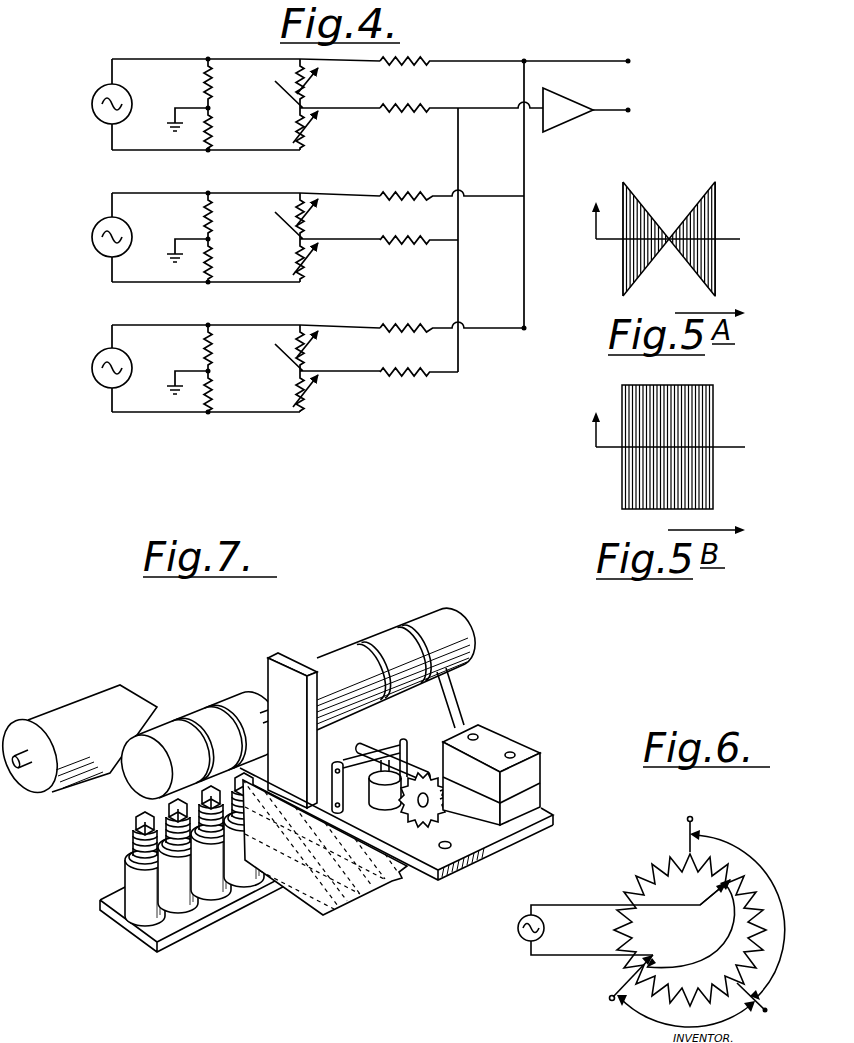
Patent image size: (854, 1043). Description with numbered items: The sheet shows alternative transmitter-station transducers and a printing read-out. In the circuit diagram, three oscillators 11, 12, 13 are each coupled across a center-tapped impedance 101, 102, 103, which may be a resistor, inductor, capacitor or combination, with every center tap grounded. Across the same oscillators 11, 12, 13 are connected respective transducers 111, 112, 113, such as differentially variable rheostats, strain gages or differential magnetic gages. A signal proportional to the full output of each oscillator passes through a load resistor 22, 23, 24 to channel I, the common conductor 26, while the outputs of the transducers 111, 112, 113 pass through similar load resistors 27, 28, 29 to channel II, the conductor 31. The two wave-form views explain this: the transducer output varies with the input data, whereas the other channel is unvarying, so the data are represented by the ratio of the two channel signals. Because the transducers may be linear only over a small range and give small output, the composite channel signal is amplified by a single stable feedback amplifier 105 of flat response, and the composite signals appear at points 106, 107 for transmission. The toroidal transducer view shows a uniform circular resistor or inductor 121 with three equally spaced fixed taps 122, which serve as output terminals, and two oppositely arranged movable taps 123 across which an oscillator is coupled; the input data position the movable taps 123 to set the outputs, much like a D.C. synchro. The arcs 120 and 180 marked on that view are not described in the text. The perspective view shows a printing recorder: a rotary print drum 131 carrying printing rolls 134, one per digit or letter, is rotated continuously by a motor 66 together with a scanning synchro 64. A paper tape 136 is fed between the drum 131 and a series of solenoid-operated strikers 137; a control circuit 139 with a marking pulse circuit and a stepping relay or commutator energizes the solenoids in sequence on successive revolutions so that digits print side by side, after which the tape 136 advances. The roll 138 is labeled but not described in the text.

In FIG. 4, the oscillator 11 is at (131, 95).
In FIG. 6, the oscillator 11 is at (517, 937).
In FIG. 4, the oscillator 12 is at (131, 228).
In FIG. 4, the oscillator 13 is at (131, 360).
In FIG. 4, the center-tapped impedance 101 is at (212, 89).
In FIG. 4, the center-tapped impedance 102 is at (212, 224).
In FIG. 4, the center-tapped impedance 103 is at (212, 357).
In FIG. 4, the transducer 111 is at (312, 89).
In FIG. 4, the transducer 112 is at (312, 224).
In FIG. 4, the transducer 113 is at (312, 355).
In FIG. 4, the load resistor 22 is at (404, 62).
In FIG. 4, the load resistor 23 is at (398, 193).
In FIG. 4, the load resistor 24 is at (400, 326).
In FIG. 4, the load resistor 27 is at (405, 107).
In FIG. 4, the load resistor 28 is at (404, 244).
In FIG. 4, the load resistor 29 is at (410, 377).
In FIG. 4, the channel I 26 is at (526, 262).
In FIG. 4, the channel II 31 is at (460, 272).
In FIG. 4, the feedback amplifier 105 is at (586, 121).
In FIG. 4, the point 106 is at (597, 66).
In FIG. 4, the point 107 is at (632, 114).
In FIG. 6, the 120 degree arc of toroidal resistor 120 is at (703, 928).
In FIG. 6, the uniform circular resistor or inductor 121 is at (635, 868).
In FIG. 6, the fixed taps 122 is at (695, 819).
In FIG. 6, the movable taps 123 is at (655, 933).
In FIG. 6, the 180 degree arc 180 is at (692, 927).
In FIG. 7, the scanning synchro 64 is at (443, 608).
In FIG. 7, the motor 66 is at (322, 657).
In FIG. 7, the rotary print drum 131 is at (184, 729).
In FIG. 7, the printing rolls 134 is at (227, 693).
In FIG. 7, the paper tape 136 is at (377, 893).
In FIG. 7, the solenoid-operated strikers 137 is at (127, 828).
In FIG. 7, the tape supply roll 138 is at (22, 752).
In FIG. 7, the control circuit 139 is at (503, 734).